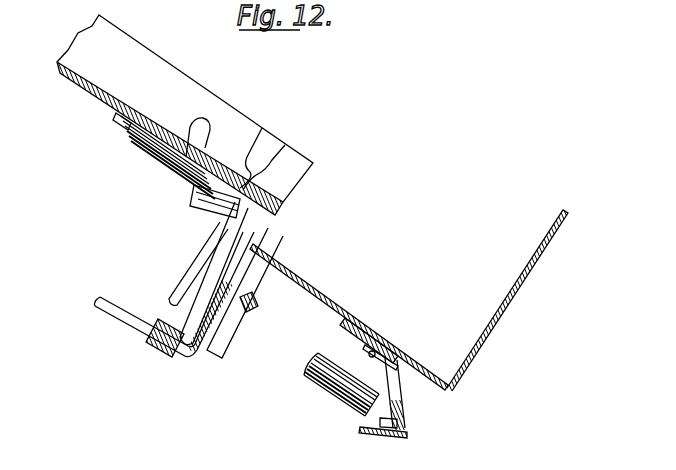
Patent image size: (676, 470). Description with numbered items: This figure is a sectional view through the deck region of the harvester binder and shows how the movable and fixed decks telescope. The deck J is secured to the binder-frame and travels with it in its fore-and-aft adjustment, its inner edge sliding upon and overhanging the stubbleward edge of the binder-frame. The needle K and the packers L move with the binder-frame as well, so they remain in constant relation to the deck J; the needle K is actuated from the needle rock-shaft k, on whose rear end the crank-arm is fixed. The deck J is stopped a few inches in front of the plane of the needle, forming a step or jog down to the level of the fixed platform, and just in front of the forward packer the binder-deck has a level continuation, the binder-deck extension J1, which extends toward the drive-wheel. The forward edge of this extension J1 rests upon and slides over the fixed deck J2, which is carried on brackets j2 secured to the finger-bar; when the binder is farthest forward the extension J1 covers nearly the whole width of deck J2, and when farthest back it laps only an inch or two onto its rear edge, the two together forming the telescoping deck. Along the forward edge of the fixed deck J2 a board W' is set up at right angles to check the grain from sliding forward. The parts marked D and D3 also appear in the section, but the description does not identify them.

The deck J is at (338, 235).
The needle rock-shaft k is at (118, 128).
The threaded shaft D is at (148, 160).
The needle K is at (188, 268).
The rod D3 is at (212, 272).
The packers L is at (224, 333).
The binder-deck extension J1 is at (317, 295).
The fixed deck J2 is at (413, 362).
The brackets j2 is at (398, 398).
The board W' is at (338, 235).